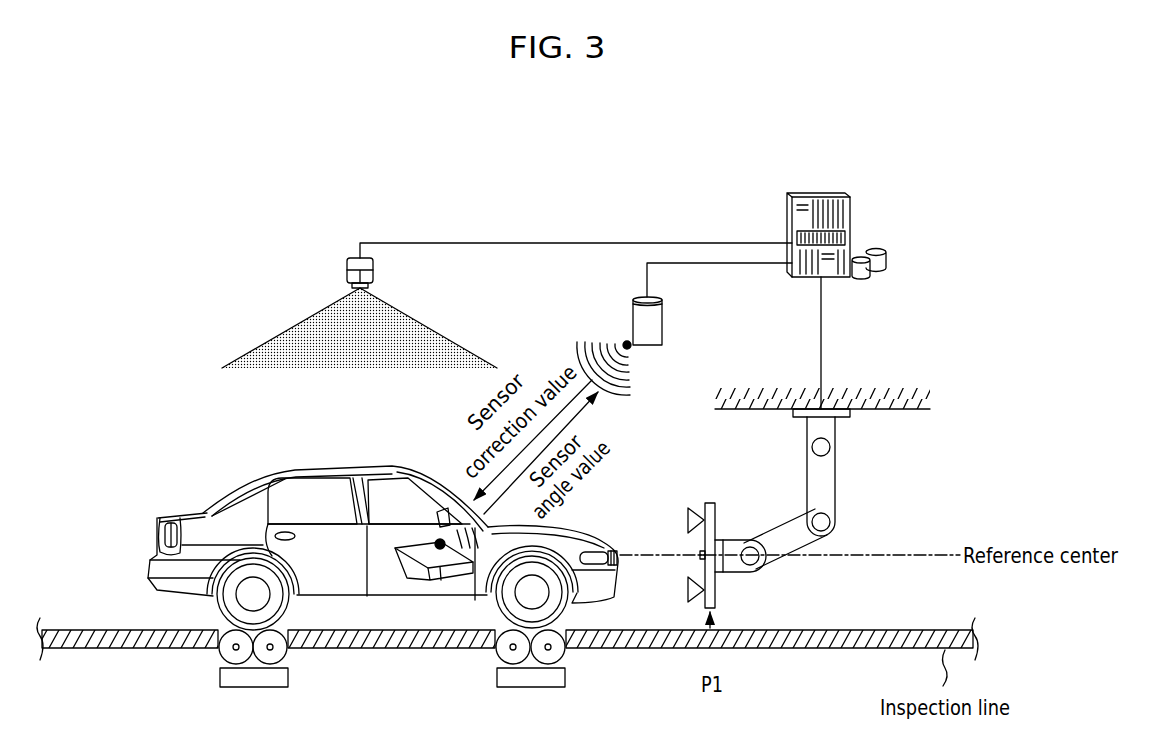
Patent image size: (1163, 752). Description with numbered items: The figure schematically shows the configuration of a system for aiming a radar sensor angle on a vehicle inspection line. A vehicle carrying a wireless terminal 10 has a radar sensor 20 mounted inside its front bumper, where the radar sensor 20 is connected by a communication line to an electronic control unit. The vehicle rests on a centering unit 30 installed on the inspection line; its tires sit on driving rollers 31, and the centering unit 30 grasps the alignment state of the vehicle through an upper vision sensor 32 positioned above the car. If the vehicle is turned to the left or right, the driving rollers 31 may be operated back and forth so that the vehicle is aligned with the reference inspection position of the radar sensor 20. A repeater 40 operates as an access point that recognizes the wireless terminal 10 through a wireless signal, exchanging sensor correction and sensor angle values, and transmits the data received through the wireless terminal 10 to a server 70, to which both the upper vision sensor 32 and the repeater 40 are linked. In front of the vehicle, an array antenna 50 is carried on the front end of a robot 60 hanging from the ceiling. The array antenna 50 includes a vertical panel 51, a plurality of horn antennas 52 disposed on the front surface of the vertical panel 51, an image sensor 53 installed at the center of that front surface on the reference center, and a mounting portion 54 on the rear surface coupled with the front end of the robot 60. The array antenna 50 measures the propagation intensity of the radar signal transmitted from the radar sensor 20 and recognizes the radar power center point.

The wireless terminal 10 is at (413, 548).
The radar sensor 20 is at (603, 546).
The centering unit 30 is at (254, 688).
The driving roller 31 is at (512, 652).
The upper vision sensor 32 is at (347, 270).
The repeater 40 is at (662, 318).
The array antenna 50 is at (705, 526).
The vertical panel 51 is at (716, 515).
The horn antennas 52 is at (688, 515).
The image sensor 53 is at (700, 553).
The mounting portion 54 is at (722, 574).
The robot 60 is at (837, 485).
The server 70 is at (829, 196).